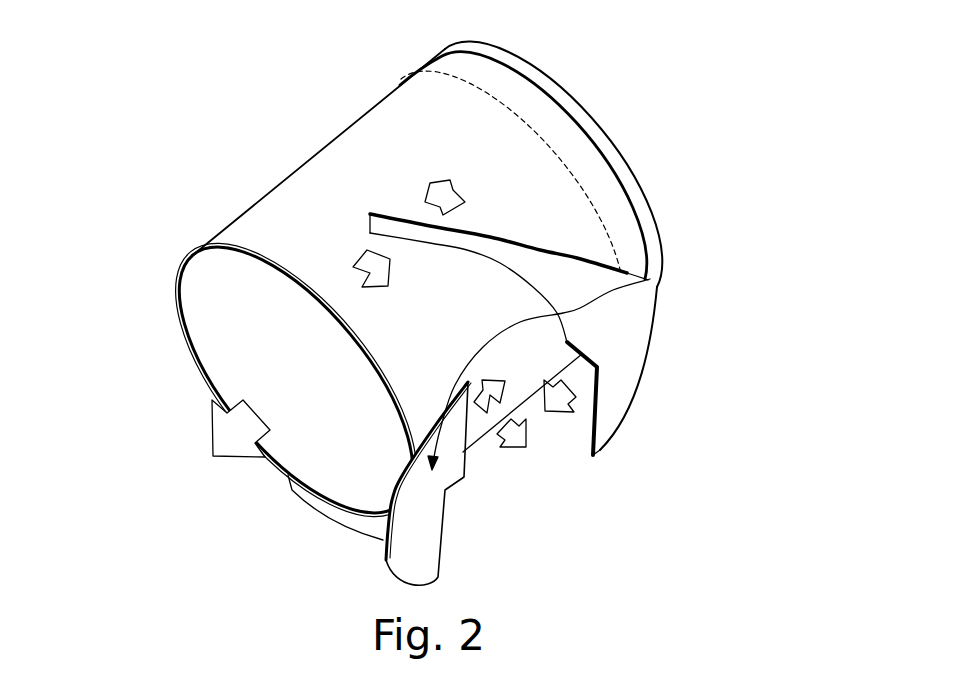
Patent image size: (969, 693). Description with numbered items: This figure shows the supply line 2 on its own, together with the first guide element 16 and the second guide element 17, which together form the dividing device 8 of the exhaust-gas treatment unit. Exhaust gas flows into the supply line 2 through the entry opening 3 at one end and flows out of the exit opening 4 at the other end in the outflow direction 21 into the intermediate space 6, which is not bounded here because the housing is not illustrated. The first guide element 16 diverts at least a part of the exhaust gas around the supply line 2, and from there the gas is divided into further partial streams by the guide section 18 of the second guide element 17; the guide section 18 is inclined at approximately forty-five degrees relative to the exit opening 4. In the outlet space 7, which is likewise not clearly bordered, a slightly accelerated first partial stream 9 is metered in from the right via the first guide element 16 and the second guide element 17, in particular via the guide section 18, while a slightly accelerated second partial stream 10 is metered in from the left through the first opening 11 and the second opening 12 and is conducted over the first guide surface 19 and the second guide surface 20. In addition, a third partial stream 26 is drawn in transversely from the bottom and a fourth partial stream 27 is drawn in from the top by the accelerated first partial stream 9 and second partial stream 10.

The supply line 2 is at (340, 178).
The entry opening 3 is at (565, 88).
The exit opening 4 is at (184, 326).
The intermediate space 6 is at (350, 116).
The outlet space 7 is at (487, 501).
The dividing device 8 is at (584, 281).
The first partial stream 9 is at (502, 394).
The second partial stream 10 is at (457, 197).
The first opening 11 is at (469, 430).
The second opening 12 is at (587, 401).
The first guide element 16 is at (330, 508).
The second guide element 17 is at (630, 358).
The guide section 18 is at (473, 233).
The first guide surface 19 is at (446, 490).
The second guide surface 20 is at (610, 326).
The outflow direction 21 is at (212, 432).
The third partial stream 26 is at (512, 450).
The fourth partial stream 27 is at (356, 262).